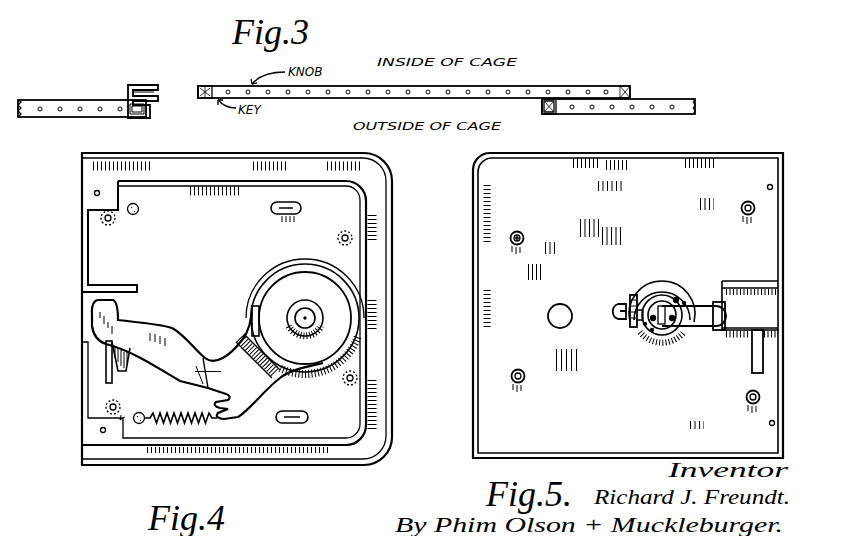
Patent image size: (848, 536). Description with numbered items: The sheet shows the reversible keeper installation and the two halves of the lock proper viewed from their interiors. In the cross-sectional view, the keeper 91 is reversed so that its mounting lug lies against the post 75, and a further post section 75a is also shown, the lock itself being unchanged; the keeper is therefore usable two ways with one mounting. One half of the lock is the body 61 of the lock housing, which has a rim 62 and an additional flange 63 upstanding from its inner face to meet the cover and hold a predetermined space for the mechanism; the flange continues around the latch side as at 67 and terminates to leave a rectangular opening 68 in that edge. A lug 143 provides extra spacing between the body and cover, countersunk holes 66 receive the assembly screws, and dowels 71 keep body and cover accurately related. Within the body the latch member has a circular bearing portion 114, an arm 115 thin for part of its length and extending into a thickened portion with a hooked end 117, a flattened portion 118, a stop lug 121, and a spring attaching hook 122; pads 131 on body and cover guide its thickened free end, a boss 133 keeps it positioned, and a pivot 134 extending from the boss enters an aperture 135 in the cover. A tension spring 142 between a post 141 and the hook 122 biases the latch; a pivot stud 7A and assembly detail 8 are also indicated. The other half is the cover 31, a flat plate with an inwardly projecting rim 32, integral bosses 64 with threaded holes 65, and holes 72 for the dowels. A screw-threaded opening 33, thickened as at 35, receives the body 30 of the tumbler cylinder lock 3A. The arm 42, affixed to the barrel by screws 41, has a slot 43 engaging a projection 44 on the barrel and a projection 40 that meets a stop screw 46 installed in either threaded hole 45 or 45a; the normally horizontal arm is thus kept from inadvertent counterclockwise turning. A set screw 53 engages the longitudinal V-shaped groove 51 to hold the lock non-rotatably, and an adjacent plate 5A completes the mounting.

In FIG. 3, the post 75 is at (147, 116).
In FIG. 3, the keeper 91 is at (134, 85).
In FIG. 3, the key bar section 75a is at (556, 104).
In FIG. 4, the rim 62 is at (392, 176).
In FIG. 4, the flange 63 is at (366, 214).
In FIG. 4, the flange continuation 67 is at (84, 236).
In FIG. 4, the rectangular opening 68 is at (77, 313).
In FIG. 4, the raised portions or pads 131 is at (140, 289).
In FIG. 5, the raised portions or pads 131 is at (752, 363).
In FIG. 4, the body of the lock housing 61 is at (344, 264).
In FIG. 4, the dowels 71 is at (101, 191).
In FIG. 4, the post 141 is at (137, 204).
In FIG. 4, the pivot 7A is at (136, 215).
In FIG. 4, the countersunk holes 66 is at (104, 218).
In FIG. 4, the spring attaching hook 122 is at (236, 414).
In FIG. 4, the circular bearing portion 114 is at (290, 292).
In FIG. 4, the arm 115 is at (280, 380).
In FIG. 4, the boss 133 is at (318, 312).
In FIG. 4, the pivot 134 is at (318, 318).
In FIG. 4, the lug 143 is at (253, 312).
In FIG. 4, the hooked end 117 is at (110, 310).
In FIG. 4, the flattened portion 118 is at (136, 326).
In FIG. 4, the stop lug 121 is at (124, 364).
In FIG. 4, the tension spring 142 is at (182, 418).
In FIG. 4, the lock housing 8 is at (462, 457).
In FIG. 5, the cover 31 is at (480, 199).
In FIG. 5, the rim 32 is at (632, 154).
In FIG. 5, the threaded hole 65 is at (519, 232).
In FIG. 5, the integral bosses 64 is at (523, 240).
In FIG. 5, the holes 72 is at (766, 186).
In FIG. 5, the aperture 135 is at (548, 312).
In FIG. 5, the lock cylinder housing 3A is at (648, 274).
In FIG. 5, the projection 44 is at (662, 296).
In FIG. 5, the slot 43 is at (662, 332).
In FIG. 5, the screws 41 is at (652, 324).
In FIG. 5, the screw-threaded opening 33 is at (672, 300).
In FIG. 5, the threaded hole 45 is at (680, 296).
In FIG. 5, the increased thickness 35 is at (686, 310).
In FIG. 5, the arm 42 is at (706, 330).
In FIG. 5, the body of the cylinder lock 30 is at (706, 306).
In FIG. 5, the stop screw 46 is at (740, 285).
In FIG. 5, the longitudinal V-shaped groove 51 is at (636, 306).
In FIG. 5, the screw 53 is at (624, 312).
In FIG. 5, the plate 5A is at (638, 318).
In FIG. 5, the threaded hole 45a is at (646, 324).
In FIG. 5, the projection 40 is at (652, 332).